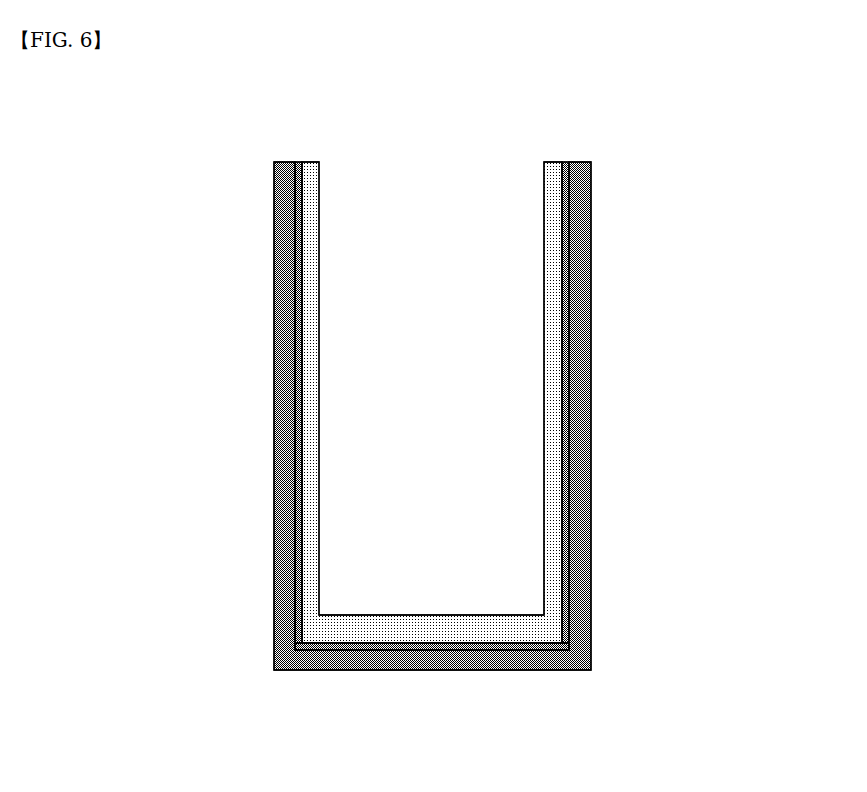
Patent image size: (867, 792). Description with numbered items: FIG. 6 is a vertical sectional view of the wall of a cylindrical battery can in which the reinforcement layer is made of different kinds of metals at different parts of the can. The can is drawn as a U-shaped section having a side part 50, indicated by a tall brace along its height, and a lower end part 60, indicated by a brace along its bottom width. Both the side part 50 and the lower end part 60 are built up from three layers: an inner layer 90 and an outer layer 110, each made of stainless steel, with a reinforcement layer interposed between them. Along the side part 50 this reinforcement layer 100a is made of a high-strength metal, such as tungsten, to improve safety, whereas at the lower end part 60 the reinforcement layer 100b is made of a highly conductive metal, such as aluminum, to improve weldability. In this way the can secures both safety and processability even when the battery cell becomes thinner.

The side part 50 is at (248, 164).
The lower end part 60 is at (587, 682).
The inner layer 90 is at (591, 290).
The reinforcement layer 100a is at (591, 242).
The reinforcement layer 100b is at (591, 627).
The outer layer 110 is at (591, 192).